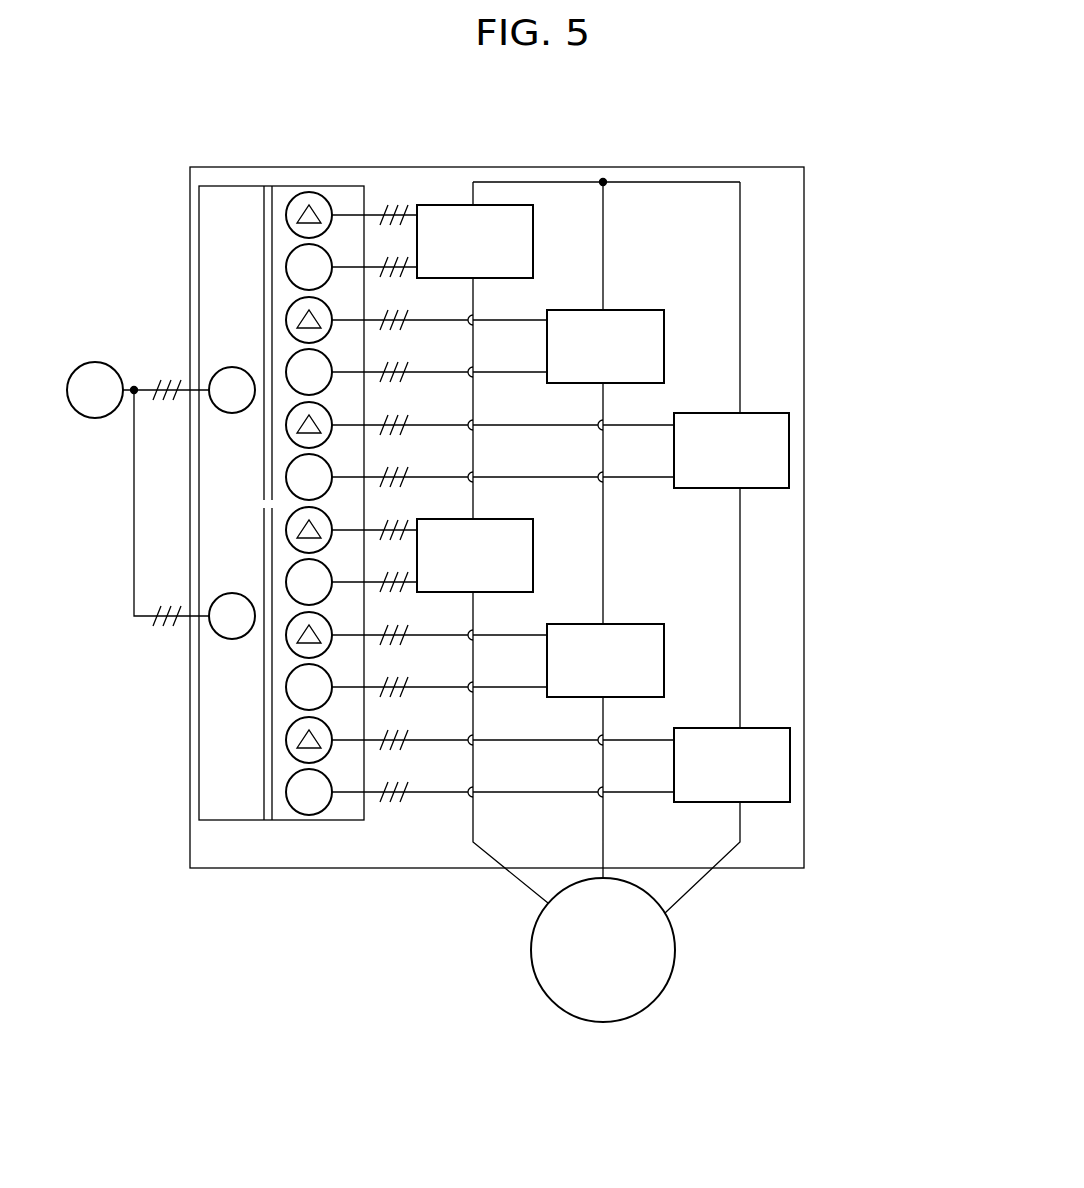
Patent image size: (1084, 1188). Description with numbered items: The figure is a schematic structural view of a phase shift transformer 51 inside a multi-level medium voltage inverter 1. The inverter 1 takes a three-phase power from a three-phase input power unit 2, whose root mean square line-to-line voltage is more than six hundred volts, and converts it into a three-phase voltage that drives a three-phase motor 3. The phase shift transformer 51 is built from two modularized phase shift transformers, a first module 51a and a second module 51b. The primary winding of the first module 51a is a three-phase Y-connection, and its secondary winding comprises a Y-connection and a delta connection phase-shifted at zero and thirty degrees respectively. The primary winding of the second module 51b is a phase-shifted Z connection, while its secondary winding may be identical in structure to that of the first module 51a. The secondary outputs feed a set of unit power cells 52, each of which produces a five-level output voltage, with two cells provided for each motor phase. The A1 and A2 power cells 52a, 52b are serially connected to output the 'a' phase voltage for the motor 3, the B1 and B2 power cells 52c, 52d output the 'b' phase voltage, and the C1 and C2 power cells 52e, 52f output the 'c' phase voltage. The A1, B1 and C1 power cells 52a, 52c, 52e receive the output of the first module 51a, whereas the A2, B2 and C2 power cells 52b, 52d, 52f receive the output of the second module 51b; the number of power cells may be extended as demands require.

The multi-level medium voltage inverter 1 is at (498, 167).
The 3-phase input power unit 2 is at (95, 362).
The 3-phase motor 3 is at (675, 950).
The phase shift transformer 51 is at (268, 186).
The first module 51a is at (243, 240).
The second module 51b is at (255, 556).
The unit power cell 52 is at (672, 504).
The A1 power cell 52a is at (534, 240).
The A2 power cell 52b is at (533, 553).
The B1 power cell 52c is at (664, 345).
The B2 power cell 52d is at (664, 658).
The C1 power cell 52e is at (789, 450).
The C2 power cell 52f is at (762, 765).